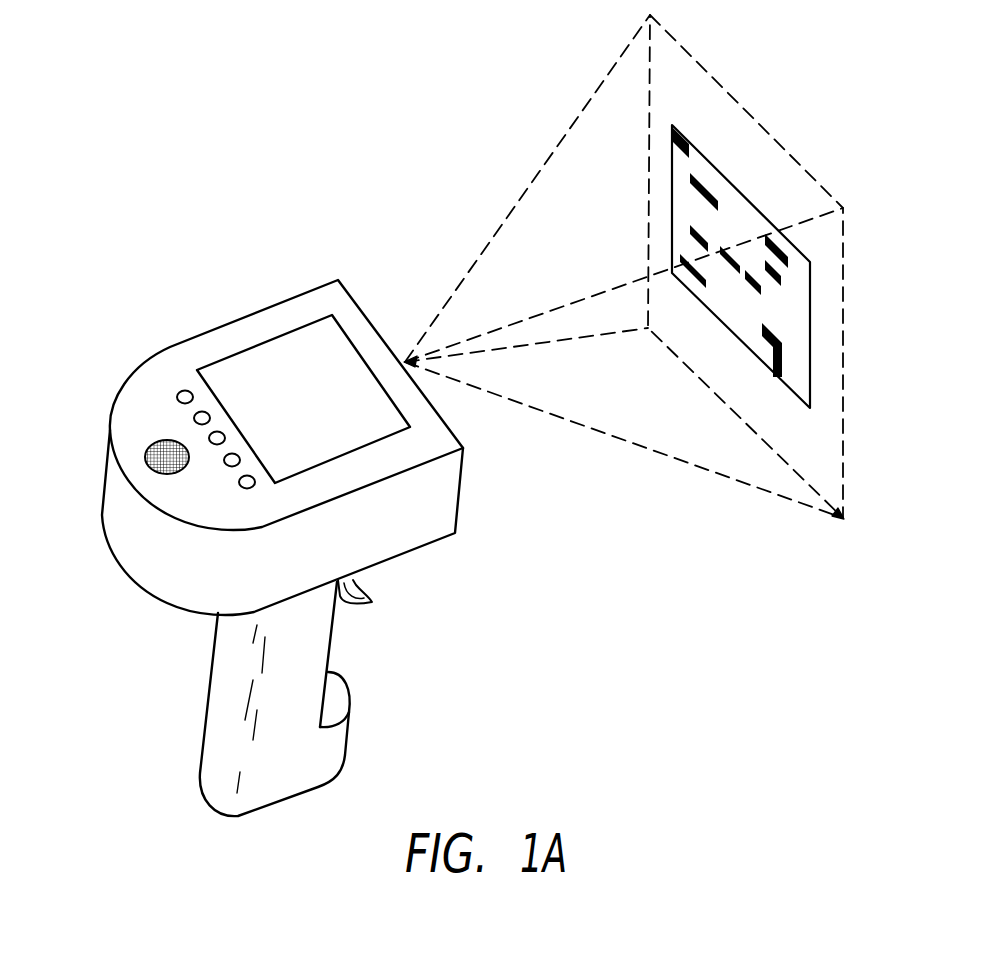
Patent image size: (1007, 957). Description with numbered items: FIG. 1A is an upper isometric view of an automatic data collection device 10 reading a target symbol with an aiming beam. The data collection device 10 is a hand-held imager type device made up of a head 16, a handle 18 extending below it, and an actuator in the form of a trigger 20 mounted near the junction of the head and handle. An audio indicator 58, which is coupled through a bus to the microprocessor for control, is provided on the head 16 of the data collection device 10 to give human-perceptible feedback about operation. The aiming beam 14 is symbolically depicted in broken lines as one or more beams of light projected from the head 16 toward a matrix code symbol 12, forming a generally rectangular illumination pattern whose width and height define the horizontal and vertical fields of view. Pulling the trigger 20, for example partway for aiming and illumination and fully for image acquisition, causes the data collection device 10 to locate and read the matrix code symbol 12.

The automatic data collection device 10 is at (249, 511).
The matrix code symbol 12 is at (750, 200).
The aiming beam 14 is at (625, 443).
The head 16 is at (147, 397).
The handle 18 is at (223, 700).
The trigger 20 is at (355, 606).
The audio indicator 58 is at (153, 462).